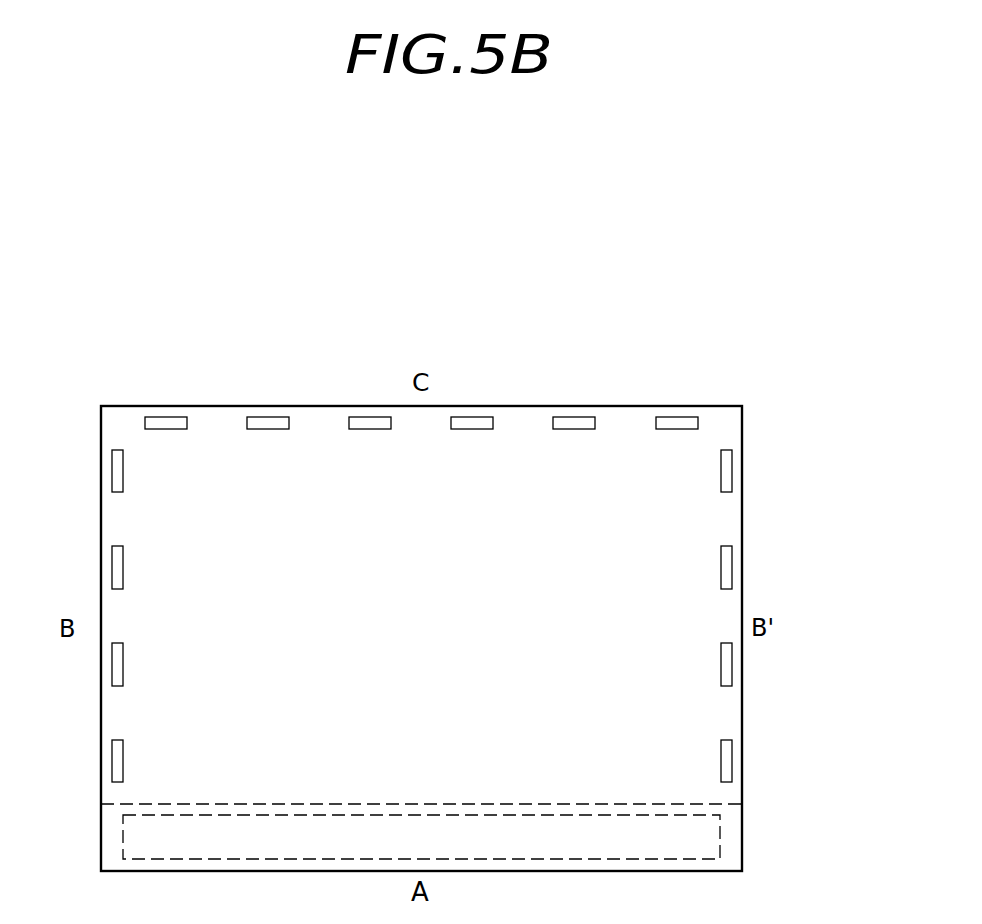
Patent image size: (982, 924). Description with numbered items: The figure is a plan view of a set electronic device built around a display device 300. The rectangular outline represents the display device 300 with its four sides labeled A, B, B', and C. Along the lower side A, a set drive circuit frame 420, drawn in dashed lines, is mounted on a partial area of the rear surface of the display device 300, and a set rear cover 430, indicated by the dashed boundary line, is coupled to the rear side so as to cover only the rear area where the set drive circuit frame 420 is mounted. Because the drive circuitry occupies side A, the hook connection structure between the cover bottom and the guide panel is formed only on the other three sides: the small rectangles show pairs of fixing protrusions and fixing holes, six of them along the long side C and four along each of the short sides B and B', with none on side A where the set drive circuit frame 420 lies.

The display device 300 is at (752, 568).
The set rear cover 430 is at (710, 804).
The set drive circuit frame 420 is at (722, 837).